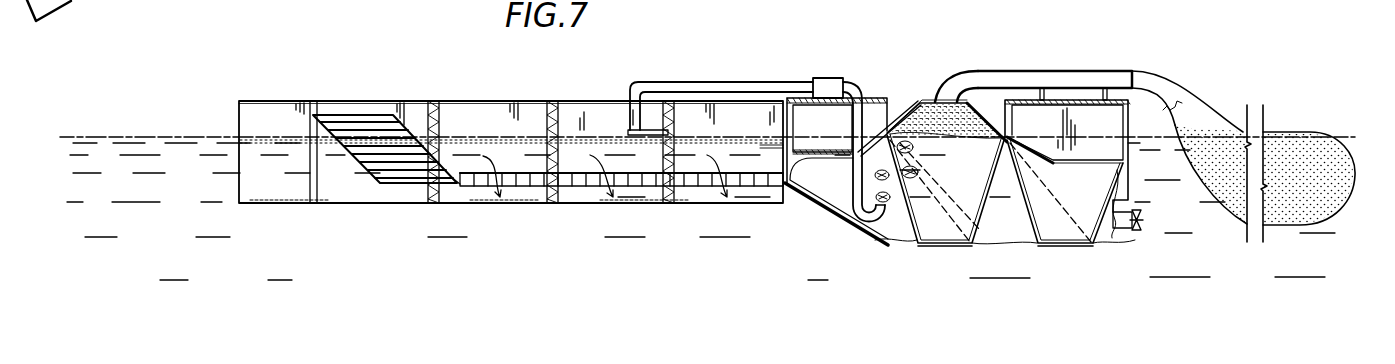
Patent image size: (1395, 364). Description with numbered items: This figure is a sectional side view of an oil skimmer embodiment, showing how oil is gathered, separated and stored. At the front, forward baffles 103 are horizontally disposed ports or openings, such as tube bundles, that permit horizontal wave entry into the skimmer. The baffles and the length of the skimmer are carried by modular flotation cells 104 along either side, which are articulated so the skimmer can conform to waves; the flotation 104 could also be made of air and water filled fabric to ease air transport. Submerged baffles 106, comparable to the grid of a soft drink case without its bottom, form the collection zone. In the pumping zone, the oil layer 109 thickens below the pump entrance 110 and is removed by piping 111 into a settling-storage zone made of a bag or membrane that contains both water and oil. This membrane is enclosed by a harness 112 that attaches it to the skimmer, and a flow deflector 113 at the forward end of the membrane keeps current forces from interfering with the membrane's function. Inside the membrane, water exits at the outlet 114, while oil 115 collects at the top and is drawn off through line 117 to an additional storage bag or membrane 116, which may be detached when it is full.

The forward baffles 103 is at (373, 165).
The modular flotation cells 104 is at (477, 110).
The submerged baffles 106 is at (533, 180).
The oil layer 109 is at (194, 135).
The pump entrance 110 is at (652, 120).
The piping 111 is at (866, 100).
The harness 112 is at (916, 232).
The flow deflector 113 is at (832, 217).
The outlet 114 is at (1150, 223).
The oil 115 is at (932, 110).
The storage bag or membrane 116 is at (1302, 140).
The line 117 is at (1025, 78).